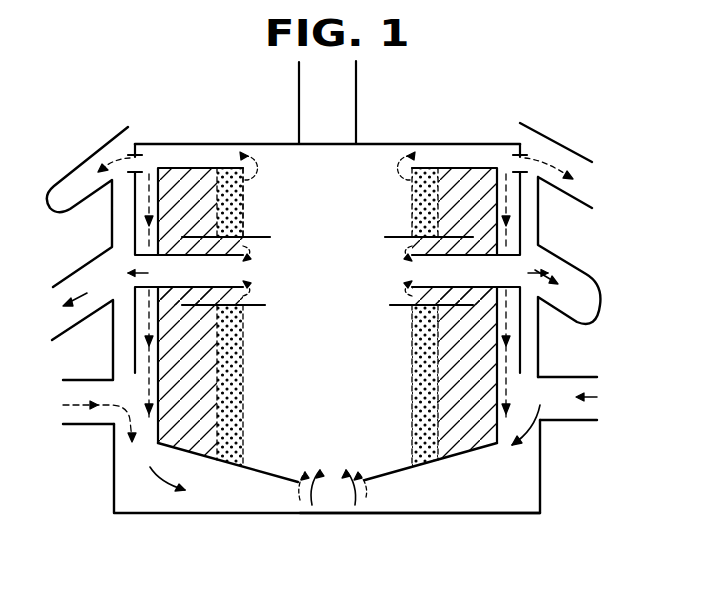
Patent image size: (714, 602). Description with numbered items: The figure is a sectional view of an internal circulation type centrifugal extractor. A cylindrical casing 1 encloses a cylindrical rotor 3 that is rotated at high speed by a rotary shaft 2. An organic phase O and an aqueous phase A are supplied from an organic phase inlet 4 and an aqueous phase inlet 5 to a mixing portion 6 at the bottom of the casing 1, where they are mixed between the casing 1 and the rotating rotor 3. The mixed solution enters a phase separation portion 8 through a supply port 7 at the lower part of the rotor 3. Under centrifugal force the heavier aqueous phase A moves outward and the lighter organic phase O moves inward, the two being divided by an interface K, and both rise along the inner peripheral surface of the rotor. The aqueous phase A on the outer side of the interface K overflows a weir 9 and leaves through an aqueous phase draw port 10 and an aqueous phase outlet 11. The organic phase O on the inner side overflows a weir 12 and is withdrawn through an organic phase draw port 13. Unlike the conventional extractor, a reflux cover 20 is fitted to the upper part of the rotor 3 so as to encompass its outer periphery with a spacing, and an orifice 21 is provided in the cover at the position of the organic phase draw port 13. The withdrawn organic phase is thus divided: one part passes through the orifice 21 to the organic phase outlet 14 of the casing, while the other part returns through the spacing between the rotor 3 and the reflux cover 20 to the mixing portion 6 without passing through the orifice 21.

The casing 1 is at (155, 516).
The rotary shaft 2 is at (357, 95).
The rotor 3 is at (393, 478).
The organic phase inlet 4 is at (77, 426).
The aqueous phase inlet 5 is at (572, 422).
The mixing portion 6 is at (492, 490).
The supply port 7 is at (330, 495).
The phase separation portion 8 is at (322, 286).
The weir for discharging the aqueous phase 9 is at (262, 235).
The aqueous phase draw port 10 is at (162, 268).
The aqueous phase outlet 11 is at (67, 280).
The weir for discharging the organic phase 12 is at (423, 165).
The organic phase draw port 13 is at (466, 153).
The organic phase outlet 14 is at (562, 145).
The reflux cover 20 is at (521, 230).
The orifice 21 is at (140, 160).
The organic phase O is at (217, 337).
The interface K is at (215, 370).
The aqueous phase A is at (210, 392).